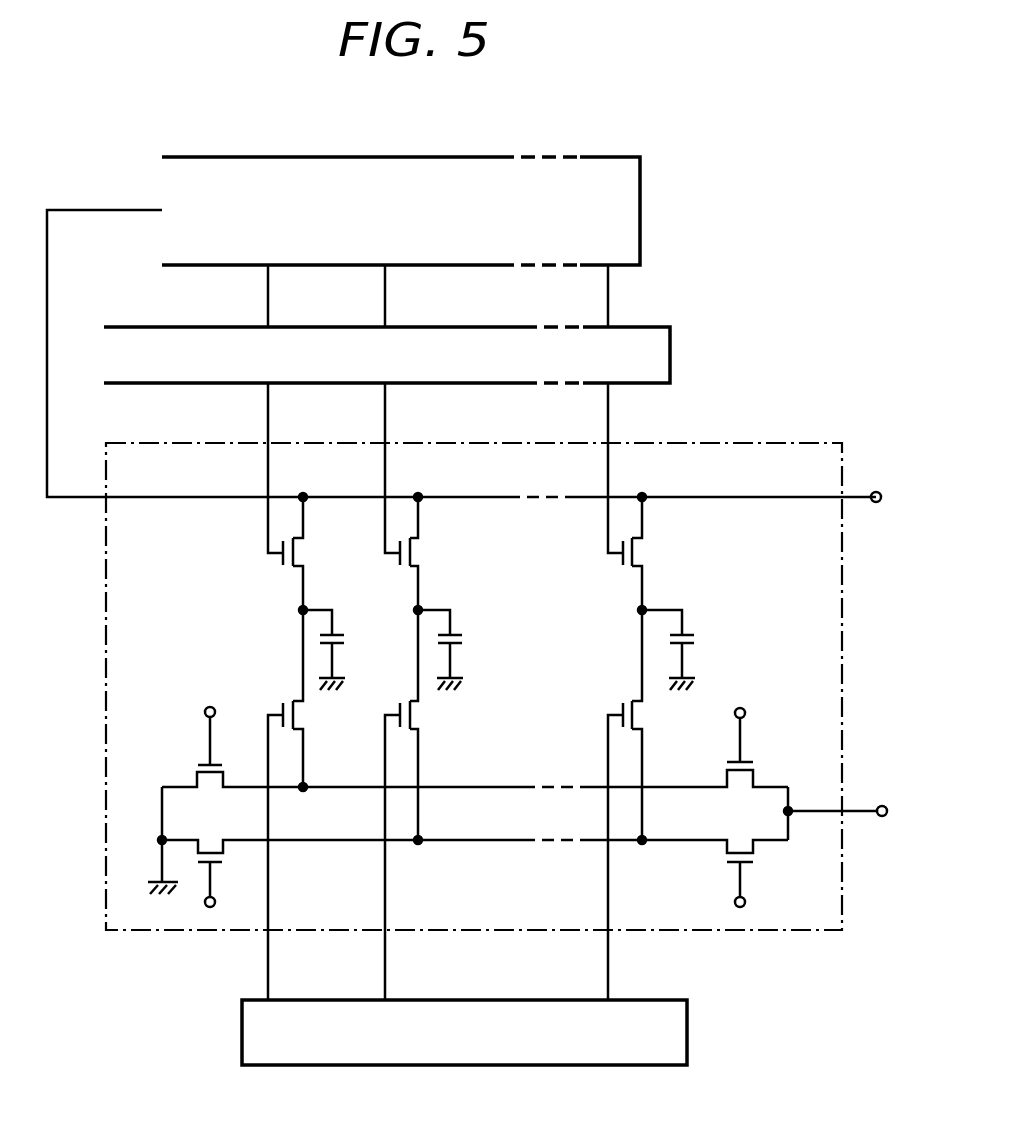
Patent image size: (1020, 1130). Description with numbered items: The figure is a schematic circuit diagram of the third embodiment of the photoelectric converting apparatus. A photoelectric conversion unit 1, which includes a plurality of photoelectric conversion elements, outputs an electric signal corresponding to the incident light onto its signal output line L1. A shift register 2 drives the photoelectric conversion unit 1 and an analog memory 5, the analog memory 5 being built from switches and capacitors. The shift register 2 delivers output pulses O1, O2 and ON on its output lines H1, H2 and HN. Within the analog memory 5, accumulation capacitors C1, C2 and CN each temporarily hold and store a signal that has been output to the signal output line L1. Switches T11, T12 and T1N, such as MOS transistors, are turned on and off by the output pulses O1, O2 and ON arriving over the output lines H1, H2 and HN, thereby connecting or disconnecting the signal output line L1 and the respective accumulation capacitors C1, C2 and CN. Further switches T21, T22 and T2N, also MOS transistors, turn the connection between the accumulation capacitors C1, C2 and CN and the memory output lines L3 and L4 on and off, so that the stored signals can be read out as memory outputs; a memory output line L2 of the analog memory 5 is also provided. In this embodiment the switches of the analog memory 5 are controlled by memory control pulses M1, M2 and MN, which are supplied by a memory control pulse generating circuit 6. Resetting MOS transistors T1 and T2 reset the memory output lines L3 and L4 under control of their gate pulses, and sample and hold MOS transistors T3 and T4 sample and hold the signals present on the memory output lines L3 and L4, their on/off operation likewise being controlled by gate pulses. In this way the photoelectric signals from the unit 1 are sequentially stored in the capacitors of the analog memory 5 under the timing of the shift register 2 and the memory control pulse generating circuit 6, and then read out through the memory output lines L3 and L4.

The photoelectric conversion unit 1 is at (640, 172).
The shift register 2 is at (670, 337).
The analog memory 5 is at (797, 440).
The memory control pulse generating circuit 6 is at (687, 1012).
The output pulse O1 is at (268, 298).
The output pulse O2 is at (385, 298).
The output pulse ON is at (608, 298).
The output line H1 is at (268, 402).
The output line H2 is at (385, 402).
The output line HN is at (608, 402).
The signal output line L1 is at (866, 490).
The memory output line L2 is at (868, 806).
The memory output line L3 is at (668, 787).
The memory output line L4 is at (694, 840).
The switch T11 is at (300, 552).
The switch T12 is at (416, 552).
The switch T1N is at (638, 552).
The switch T21 is at (300, 715).
The switch T22 is at (416, 715).
The switch T2N is at (638, 715).
The accumulation capacitor C1 is at (346, 640).
The accumulation capacitor C2 is at (464, 640).
The accumulation capacitor CN is at (696, 638).
The resetting MOS transistor T1 is at (228, 772).
The resetting MOS transistor T2 is at (226, 856).
The sample and hold MOS transistor T3 is at (758, 764).
The sample and hold MOS transistor T4 is at (758, 856).
The memory control pulse M1 is at (268, 967).
The memory control pulse M2 is at (385, 967).
The memory control pulse MN is at (608, 967).